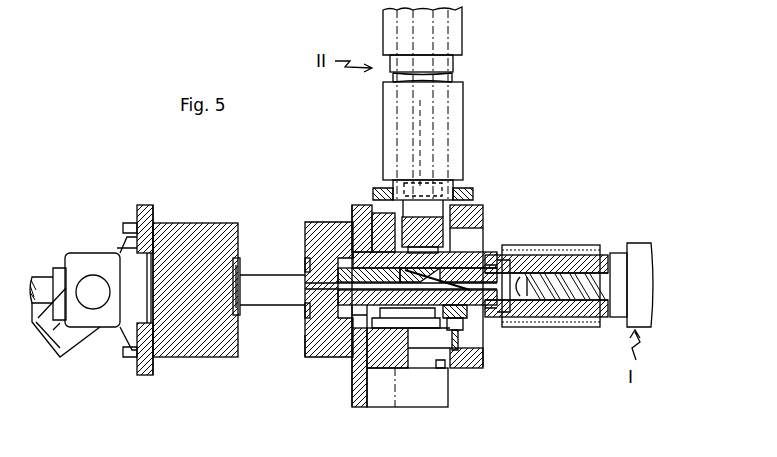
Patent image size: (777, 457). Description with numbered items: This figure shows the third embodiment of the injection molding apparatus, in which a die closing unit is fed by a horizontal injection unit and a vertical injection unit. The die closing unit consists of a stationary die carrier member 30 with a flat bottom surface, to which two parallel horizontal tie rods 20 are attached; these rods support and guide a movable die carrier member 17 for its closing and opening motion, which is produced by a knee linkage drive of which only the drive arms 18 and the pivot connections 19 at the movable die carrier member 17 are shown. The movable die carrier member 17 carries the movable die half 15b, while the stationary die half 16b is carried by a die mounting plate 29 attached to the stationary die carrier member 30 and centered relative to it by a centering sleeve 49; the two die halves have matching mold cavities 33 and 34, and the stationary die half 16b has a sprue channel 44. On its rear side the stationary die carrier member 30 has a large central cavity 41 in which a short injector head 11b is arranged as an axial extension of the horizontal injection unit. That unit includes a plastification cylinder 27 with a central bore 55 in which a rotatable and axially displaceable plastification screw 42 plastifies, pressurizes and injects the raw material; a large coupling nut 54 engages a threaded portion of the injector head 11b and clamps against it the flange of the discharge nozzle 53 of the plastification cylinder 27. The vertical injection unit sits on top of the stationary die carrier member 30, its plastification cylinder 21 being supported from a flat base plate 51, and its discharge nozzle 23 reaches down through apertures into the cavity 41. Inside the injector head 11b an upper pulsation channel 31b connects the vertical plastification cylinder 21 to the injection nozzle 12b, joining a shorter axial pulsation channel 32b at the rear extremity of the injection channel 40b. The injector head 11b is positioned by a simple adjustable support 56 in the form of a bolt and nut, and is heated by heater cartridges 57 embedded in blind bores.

The injector head 11b is at (418, 350).
The injection nozzle 12b is at (305, 352).
The movable die half 15b is at (200, 255).
The stationary die half 16b is at (330, 247).
The movable die carrier member 17 is at (130, 250).
The drive arms 18 is at (67, 337).
The pivot connections 19 is at (91, 283).
The tie rods 20 is at (43, 283).
The plastification cylinder 21 is at (443, 105).
The discharge nozzle 23 is at (445, 216).
The plastification cylinder 27 is at (572, 303).
The die mounting plate 29 is at (360, 407).
The stationary die carrier member 30 is at (387, 353).
The upper pulsation channel 31b is at (371, 202).
The axial pulsation channel 32b is at (355, 375).
The mold cavity 33 is at (236, 250).
The mold cavity 34 is at (303, 313).
The injection channel 40b is at (305, 222).
The central cavity 41 is at (447, 380).
The plastification screw 42 is at (598, 318).
The sprue channel 44 is at (305, 266).
The centering sleeve 49 is at (342, 352).
The base plate 51 is at (470, 188).
The discharge nozzle 53 is at (487, 240).
The coupling nut 54 is at (480, 330).
The central bore 55 is at (428, 143).
The adjustable support 56 is at (470, 335).
The heater cartridges 57 is at (449, 360).